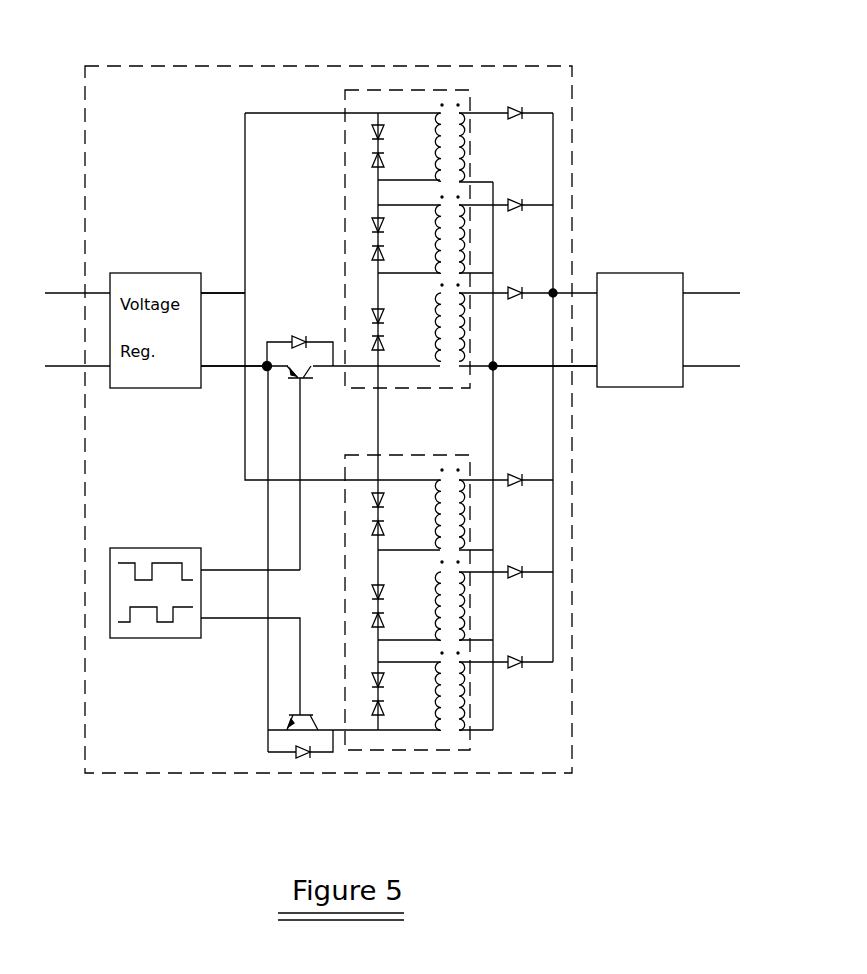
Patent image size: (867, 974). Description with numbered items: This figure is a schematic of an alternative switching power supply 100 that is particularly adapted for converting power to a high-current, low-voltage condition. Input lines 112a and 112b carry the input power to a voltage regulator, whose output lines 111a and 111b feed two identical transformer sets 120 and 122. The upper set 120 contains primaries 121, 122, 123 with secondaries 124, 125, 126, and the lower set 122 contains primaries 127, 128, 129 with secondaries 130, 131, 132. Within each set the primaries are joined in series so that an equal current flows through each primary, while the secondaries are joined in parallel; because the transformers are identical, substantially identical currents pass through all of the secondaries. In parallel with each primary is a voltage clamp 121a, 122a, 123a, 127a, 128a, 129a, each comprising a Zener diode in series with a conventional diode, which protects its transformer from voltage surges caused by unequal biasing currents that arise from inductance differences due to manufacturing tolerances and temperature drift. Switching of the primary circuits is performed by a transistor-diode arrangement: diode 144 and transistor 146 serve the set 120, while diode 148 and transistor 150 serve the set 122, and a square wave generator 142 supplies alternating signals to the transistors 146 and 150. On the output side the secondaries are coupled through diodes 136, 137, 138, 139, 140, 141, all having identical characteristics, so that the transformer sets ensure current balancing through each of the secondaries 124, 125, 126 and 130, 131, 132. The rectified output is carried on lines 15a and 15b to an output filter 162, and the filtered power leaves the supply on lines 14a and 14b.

The switching power supply 100 is at (313, 62).
The transformer set 120 is at (428, 88).
The transformer set 122 is at (402, 756).
The input line 112a is at (67, 288).
The input line 112b is at (72, 374).
The output line 111a is at (222, 286).
The output line 111b is at (224, 374).
The oscillator 142 is at (155, 645).
The diode 144 is at (303, 332).
The transistor 146 is at (318, 390).
The diode 148 is at (302, 765).
The transistor 150 is at (284, 720).
The voltage clamp 121a is at (367, 131).
The zener diode pair 122a is at (367, 225).
The voltage clamp 123a is at (367, 316).
The voltage clamp 127a is at (367, 502).
The voltage clamp 128a is at (367, 592).
The voltage clamp 129a is at (367, 686).
The primary 121 is at (435, 162).
The primary 123 is at (435, 343).
The primary 127 is at (435, 531).
The primary 128 is at (435, 622).
The primary 129 is at (435, 712).
The secondary 124 is at (467, 163).
The secondary 125 is at (467, 253).
The secondary 126 is at (467, 340).
The secondary 130 is at (467, 525).
The secondary 131 is at (467, 620).
The secondary 132 is at (467, 710).
The diode 136 is at (521, 105).
The diode 137 is at (527, 198).
The diode 138 is at (537, 284).
The diode 139 is at (528, 471).
The diode 140 is at (528, 563).
The diode 141 is at (528, 653).
The output line 15a is at (582, 288).
The output return line 15b is at (582, 372).
The output filter 162 is at (657, 270).
The filtered output line 14a is at (705, 289).
The filtered output return line 14b is at (704, 372).